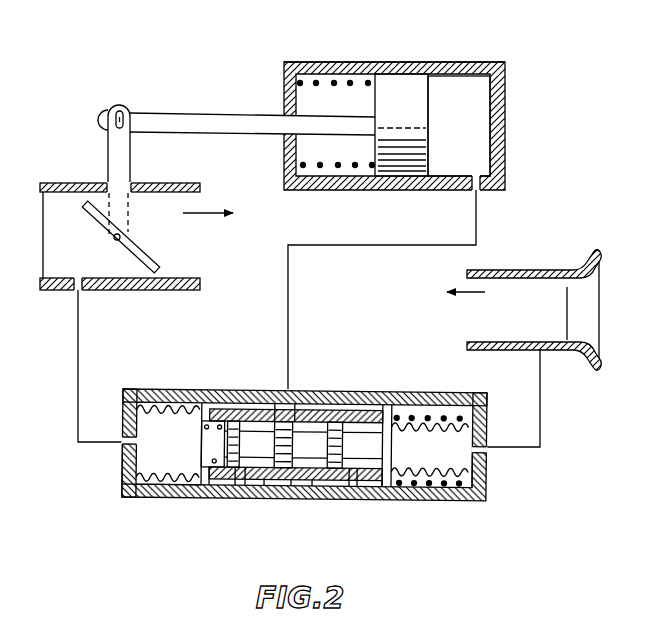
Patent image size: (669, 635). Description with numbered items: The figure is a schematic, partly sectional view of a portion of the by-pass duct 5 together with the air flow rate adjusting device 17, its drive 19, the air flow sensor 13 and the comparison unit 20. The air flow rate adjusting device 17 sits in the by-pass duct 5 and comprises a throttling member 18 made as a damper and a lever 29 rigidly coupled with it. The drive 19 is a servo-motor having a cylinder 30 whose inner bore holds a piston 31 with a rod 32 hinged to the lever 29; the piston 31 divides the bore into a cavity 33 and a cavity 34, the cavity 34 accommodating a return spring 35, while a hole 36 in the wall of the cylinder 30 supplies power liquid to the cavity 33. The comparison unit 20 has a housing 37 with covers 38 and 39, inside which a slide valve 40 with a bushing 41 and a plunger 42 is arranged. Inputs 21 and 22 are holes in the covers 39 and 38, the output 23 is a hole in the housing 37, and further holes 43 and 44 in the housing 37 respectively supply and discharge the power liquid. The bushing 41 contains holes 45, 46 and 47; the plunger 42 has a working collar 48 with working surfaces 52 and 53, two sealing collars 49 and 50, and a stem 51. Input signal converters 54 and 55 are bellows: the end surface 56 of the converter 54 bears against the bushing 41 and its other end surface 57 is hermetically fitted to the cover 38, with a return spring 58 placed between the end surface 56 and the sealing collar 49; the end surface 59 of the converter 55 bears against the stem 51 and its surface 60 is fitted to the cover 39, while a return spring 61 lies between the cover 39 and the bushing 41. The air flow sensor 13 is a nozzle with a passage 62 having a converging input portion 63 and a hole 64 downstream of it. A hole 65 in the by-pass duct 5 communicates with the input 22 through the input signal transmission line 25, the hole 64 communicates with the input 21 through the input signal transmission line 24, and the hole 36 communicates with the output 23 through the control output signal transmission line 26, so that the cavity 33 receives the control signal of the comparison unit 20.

The by-pass duct 5 is at (145, 236).
The air flow sensor 13 is at (481, 267).
The air flow rate adjusting device 17 is at (109, 104).
The throttling member 18 is at (88, 208).
The drive 19 is at (492, 63).
The comparison unit 20 is at (121, 449).
The input 21 is at (490, 447).
The input 22 is at (122, 438).
The output 23 is at (283, 398).
The input signal transmission line 24 is at (541, 421).
The input signal transmission line 25 is at (80, 352).
The control output signal transmission line 26 is at (365, 244).
The lever 29 is at (127, 153).
The cylinder 30 is at (292, 62).
The piston 31 is at (405, 90).
The rod 32 is at (233, 117).
The cavity 33 is at (458, 90).
The cavity 34 is at (325, 96).
The return spring 35 is at (349, 90).
The hole 36 is at (475, 192).
The housing 37 is at (140, 498).
The cover 38 is at (122, 478).
The cover 39 is at (488, 470).
The slide valve 40 is at (190, 498).
The bushing 41 is at (201, 498).
The plunger 42 is at (395, 498).
The hole 43 is at (313, 498).
The hole 44 is at (246, 498).
The hole 45 is at (300, 398).
The hole 46 is at (265, 498).
The hole 47 is at (333, 498).
The working collar 48 is at (292, 498).
The sealing collar 49 is at (232, 398).
The sealing collar 50 is at (352, 400).
The stem 51 is at (377, 400).
The working surface 52 is at (255, 398).
The working surface 53 is at (330, 400).
The input signal converter 54 is at (158, 396).
The input signal converter 55 is at (428, 498).
The end surface 56 is at (225, 498).
The end surface 57 is at (131, 398).
The return spring 58 is at (208, 396).
The end surface 59 is at (395, 400).
The surface 60 is at (487, 498).
The return spring 61 is at (452, 498).
The passage 62 is at (530, 290).
The input portion 63 is at (583, 262).
The hole 64 is at (541, 368).
The hole 65 is at (84, 294).